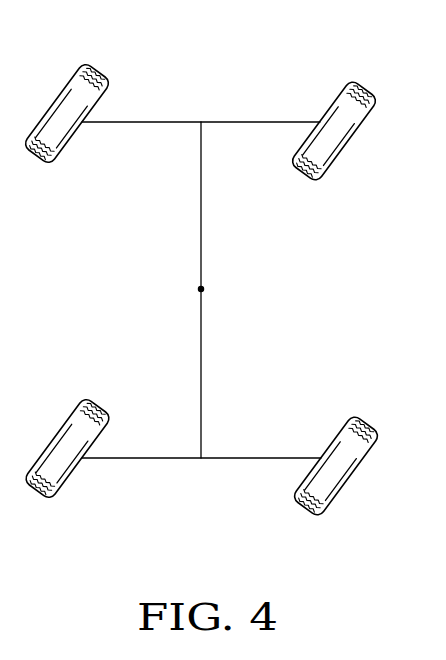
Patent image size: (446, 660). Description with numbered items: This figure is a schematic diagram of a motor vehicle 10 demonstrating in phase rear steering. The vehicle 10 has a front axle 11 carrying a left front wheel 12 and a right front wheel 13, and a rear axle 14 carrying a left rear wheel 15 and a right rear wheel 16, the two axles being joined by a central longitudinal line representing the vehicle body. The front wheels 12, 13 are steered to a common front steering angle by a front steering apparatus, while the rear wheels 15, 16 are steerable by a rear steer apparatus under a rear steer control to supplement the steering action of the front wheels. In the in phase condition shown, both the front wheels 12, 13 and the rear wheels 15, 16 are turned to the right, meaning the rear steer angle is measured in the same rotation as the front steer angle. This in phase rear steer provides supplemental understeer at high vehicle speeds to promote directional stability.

The motor vehicle 10 is at (378, 190).
The front axle 11 is at (230, 121).
The left front wheel 12 is at (54, 97).
The right front wheel 13 is at (327, 101).
The rear axle 14 is at (170, 459).
The left rear wheel 15 is at (72, 476).
The right rear wheel 16 is at (348, 484).